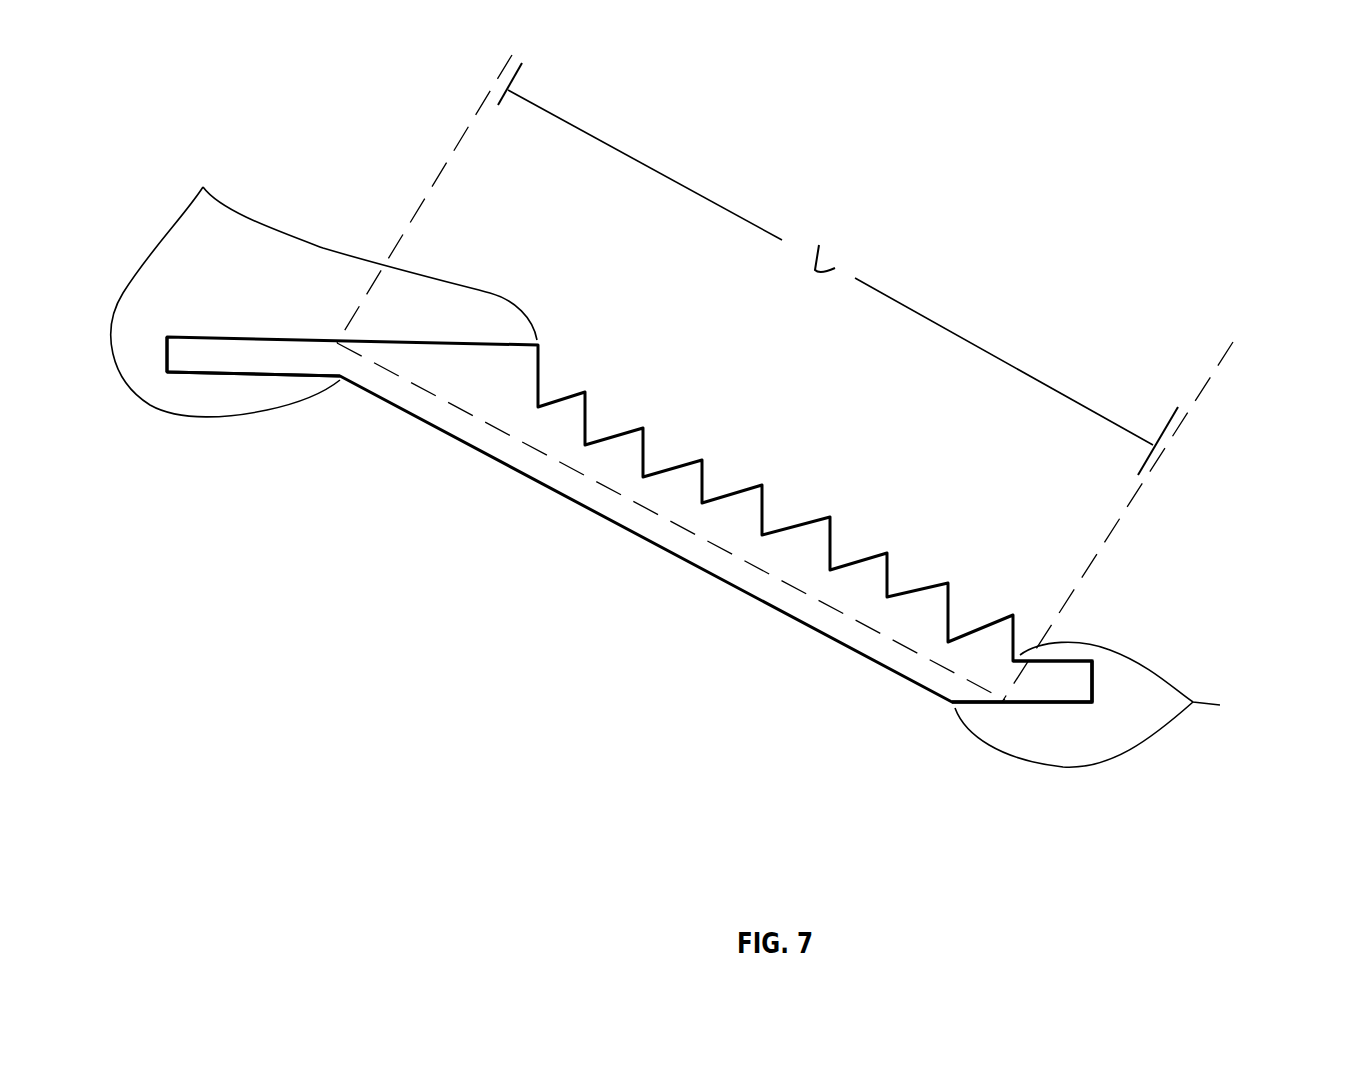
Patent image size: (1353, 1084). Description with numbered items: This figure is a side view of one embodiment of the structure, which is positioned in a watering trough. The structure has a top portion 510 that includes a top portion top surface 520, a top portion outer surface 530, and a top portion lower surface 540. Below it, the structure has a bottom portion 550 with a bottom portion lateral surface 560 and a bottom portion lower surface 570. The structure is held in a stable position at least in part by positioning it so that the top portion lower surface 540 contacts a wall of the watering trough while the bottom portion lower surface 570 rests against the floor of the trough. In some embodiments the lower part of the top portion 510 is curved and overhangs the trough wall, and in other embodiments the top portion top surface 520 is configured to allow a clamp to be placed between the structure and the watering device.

The top portion 510 is at (203, 187).
The top portion top surface 520 is at (425, 345).
The top portion outer surface 530 is at (166, 347).
The top portion lower surface 540 is at (285, 377).
The bottom portion 550 is at (1125, 704).
The bottom portion lateral surface 560 is at (1092, 683).
The bottom portion lower surface 570 is at (1045, 703).